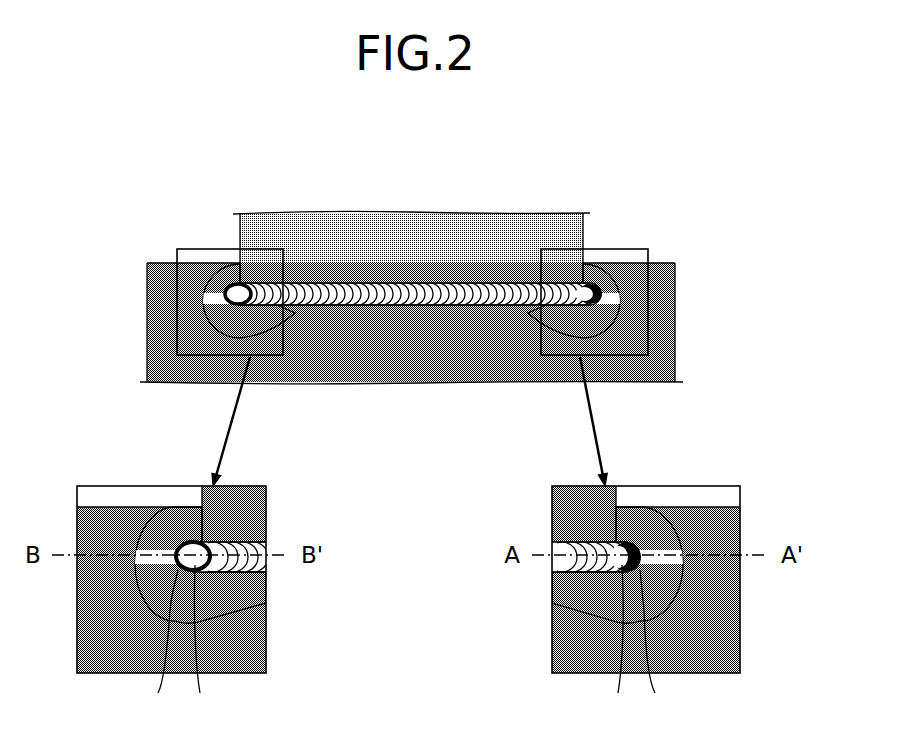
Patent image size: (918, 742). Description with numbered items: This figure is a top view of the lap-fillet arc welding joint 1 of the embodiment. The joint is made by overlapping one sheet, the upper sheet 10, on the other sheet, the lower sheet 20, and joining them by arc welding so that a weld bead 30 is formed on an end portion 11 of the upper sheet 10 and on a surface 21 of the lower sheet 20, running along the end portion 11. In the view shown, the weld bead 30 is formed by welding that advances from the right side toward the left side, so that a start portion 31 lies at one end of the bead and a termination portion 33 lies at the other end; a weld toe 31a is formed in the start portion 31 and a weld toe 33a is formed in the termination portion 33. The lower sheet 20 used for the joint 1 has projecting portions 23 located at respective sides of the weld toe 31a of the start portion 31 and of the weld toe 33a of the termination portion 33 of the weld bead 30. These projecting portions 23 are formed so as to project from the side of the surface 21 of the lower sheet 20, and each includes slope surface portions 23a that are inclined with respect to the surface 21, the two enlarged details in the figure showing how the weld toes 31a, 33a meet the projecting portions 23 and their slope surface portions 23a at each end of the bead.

The lap-fillet arc welding joint 1 is at (122, 205).
The upper sheet 10 is at (444, 227).
The end portion 11 is at (493, 272).
The lower sheet 20 is at (441, 346).
The surface 21 is at (505, 368).
The projecting portions 23 is at (623, 295).
The slope surface portions 23a is at (185, 528).
The weld bead 30 is at (423, 276).
The start portion 31 is at (616, 643).
The weld toe 31a is at (665, 646).
The termination portion 33 is at (201, 643).
The weld toe 33a is at (153, 646).